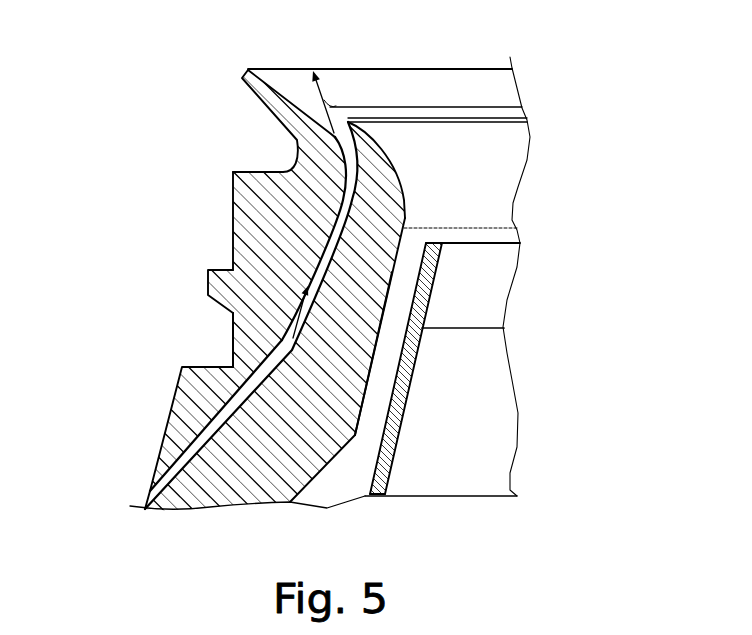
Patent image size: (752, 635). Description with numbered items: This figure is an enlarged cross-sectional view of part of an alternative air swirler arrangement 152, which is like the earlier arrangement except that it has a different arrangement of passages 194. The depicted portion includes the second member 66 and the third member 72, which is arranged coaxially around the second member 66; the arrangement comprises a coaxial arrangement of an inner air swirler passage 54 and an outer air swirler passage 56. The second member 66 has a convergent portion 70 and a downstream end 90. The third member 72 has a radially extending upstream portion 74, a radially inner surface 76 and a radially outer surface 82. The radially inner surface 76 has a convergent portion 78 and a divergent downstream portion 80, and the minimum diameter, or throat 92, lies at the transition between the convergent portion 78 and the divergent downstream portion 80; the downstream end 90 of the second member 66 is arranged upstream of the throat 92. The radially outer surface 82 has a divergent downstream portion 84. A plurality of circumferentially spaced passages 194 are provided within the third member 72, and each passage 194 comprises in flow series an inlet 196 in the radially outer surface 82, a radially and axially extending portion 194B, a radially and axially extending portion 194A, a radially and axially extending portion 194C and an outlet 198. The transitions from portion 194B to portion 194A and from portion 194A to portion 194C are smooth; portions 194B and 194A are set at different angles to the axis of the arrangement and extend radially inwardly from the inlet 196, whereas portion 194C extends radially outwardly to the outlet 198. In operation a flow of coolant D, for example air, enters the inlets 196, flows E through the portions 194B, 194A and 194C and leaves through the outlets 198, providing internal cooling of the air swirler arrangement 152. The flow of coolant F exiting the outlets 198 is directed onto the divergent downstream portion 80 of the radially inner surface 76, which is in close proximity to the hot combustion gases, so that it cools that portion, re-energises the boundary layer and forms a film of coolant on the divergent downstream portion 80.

The air swirler arrangement 152 is at (556, 99).
The divergent downstream portion 80 is at (383, 140).
The throat 92 is at (399, 173).
The downstream end 90 is at (430, 247).
The radially inner surface 76 is at (395, 268).
The inner air swirler passage 54 is at (437, 368).
The convergent portion 78 is at (377, 342).
The second member 66 is at (400, 384).
The outer air swirler passage 56 is at (375, 420).
The convergent portion 70 is at (387, 448).
The outlet 198 is at (333, 118).
The divergent downstream portion 84 is at (298, 147).
The radially and axially extending portion 194C is at (347, 150).
The radially and axially extending portion 194A is at (338, 207).
The third member 72 is at (267, 250).
The flow of coolant E is at (306, 277).
The radially outer surface 82 is at (233, 325).
The radially and axially extending portion 194B is at (233, 405).
The radially extending upstream portion 74 is at (172, 415).
The inlet 196 is at (157, 481).
The flow of coolant D is at (130, 491).
The passage 194 is at (173, 462).
The flow of coolant F is at (318, 85).